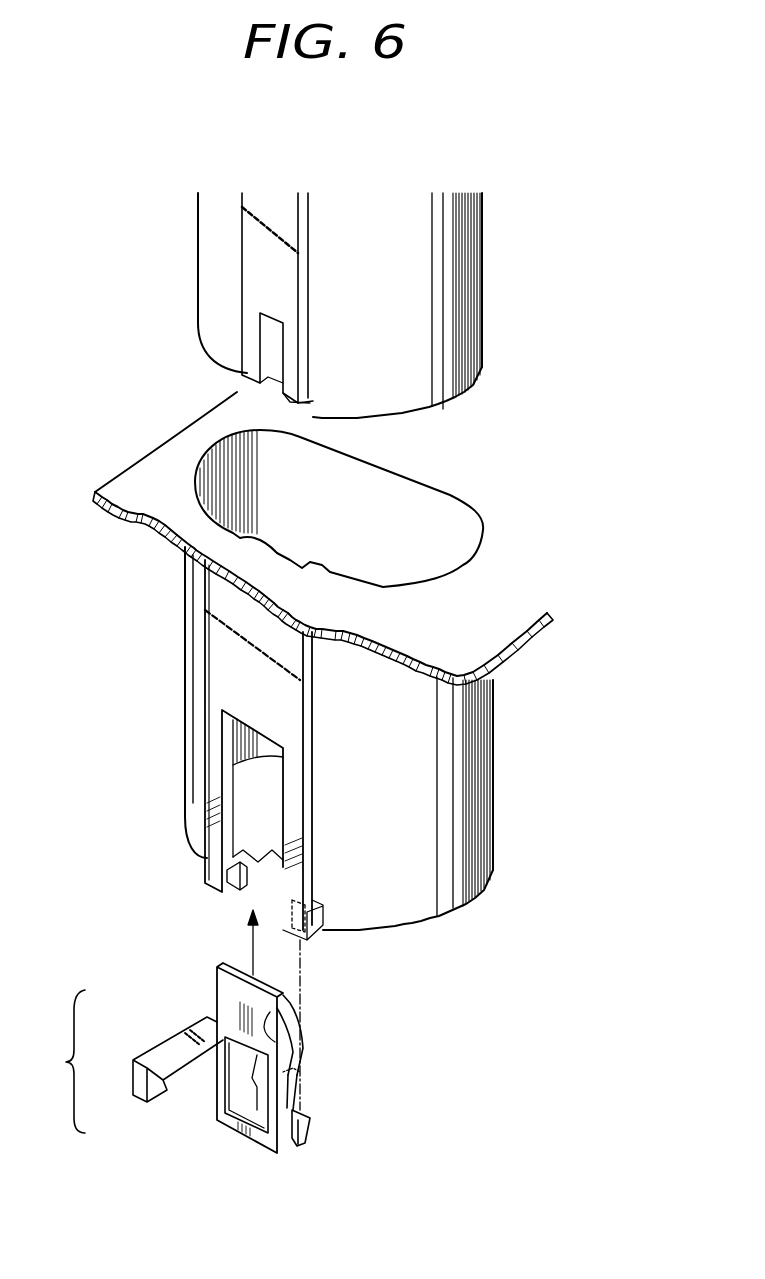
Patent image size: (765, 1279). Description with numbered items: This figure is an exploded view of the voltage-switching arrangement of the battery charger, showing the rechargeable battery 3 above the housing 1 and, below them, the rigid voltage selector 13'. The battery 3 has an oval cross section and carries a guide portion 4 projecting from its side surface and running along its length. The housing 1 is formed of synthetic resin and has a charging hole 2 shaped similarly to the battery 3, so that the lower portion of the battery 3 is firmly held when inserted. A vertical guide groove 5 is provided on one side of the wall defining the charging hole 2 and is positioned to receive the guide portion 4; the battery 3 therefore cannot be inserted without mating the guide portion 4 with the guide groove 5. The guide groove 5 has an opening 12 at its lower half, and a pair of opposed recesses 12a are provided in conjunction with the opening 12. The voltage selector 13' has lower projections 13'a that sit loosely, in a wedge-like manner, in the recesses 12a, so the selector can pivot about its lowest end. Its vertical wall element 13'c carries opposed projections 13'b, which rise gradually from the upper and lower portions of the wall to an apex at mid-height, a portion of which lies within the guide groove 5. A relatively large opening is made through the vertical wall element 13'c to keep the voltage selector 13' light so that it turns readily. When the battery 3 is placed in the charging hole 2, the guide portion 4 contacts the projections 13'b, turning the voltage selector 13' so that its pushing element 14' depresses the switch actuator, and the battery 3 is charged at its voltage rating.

The housing 1 is at (467, 623).
The charging hole 2 is at (437, 537).
The battery 3 is at (457, 253).
The guide portion 4 is at (253, 283).
The guide groove 5 is at (187, 552).
The opening 12 is at (230, 785).
The recesses 12a is at (227, 883).
The voltage selector 13' is at (161, 1058).
The lower projections 13'a is at (352, 1145).
The opposed projections 13'b is at (350, 1089).
The vertical wall element 13'c is at (327, 1035).
The pushing element 14' is at (155, 1052).